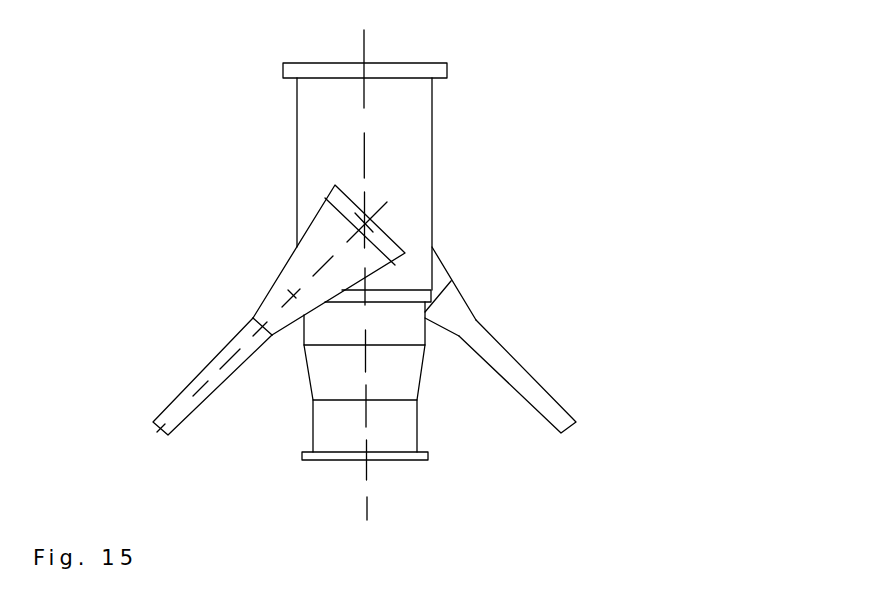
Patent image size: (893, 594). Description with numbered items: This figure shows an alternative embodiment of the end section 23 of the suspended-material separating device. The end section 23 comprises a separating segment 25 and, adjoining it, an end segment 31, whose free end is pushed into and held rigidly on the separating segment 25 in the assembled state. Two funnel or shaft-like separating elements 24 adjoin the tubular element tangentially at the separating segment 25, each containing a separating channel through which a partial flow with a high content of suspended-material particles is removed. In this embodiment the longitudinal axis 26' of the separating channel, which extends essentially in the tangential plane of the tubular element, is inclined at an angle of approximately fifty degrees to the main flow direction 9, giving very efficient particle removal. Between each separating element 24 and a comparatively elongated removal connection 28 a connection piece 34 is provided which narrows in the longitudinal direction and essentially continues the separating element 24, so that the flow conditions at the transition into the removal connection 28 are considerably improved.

The main flow direction 9 is at (364, 50).
The end section 23 is at (627, 160).
The separating element 24 is at (312, 253).
The separating segment 25 is at (398, 182).
The longitudinal axis of the separating channel 26' is at (103, 414).
The removal connection 28 is at (182, 393).
The end segment 31 is at (302, 383).
The connection piece 34 is at (275, 303).